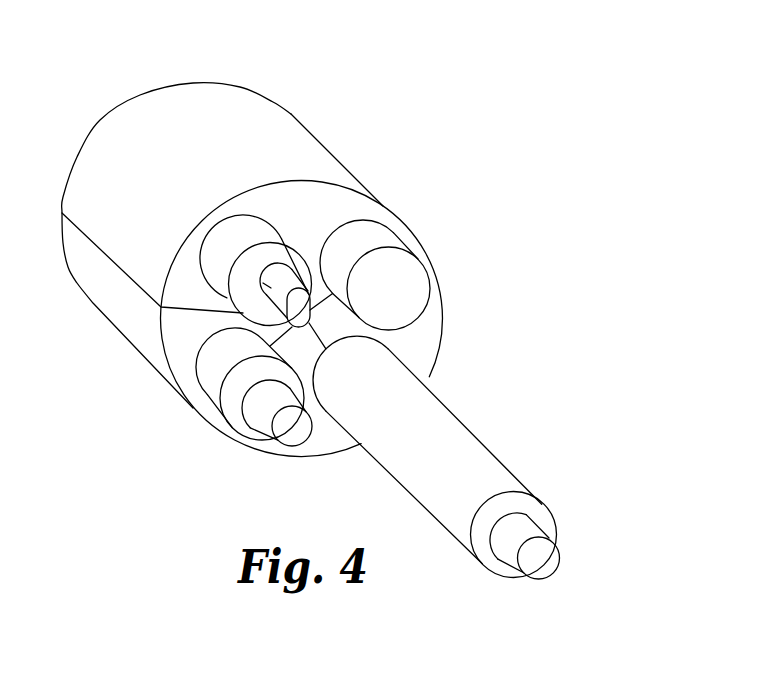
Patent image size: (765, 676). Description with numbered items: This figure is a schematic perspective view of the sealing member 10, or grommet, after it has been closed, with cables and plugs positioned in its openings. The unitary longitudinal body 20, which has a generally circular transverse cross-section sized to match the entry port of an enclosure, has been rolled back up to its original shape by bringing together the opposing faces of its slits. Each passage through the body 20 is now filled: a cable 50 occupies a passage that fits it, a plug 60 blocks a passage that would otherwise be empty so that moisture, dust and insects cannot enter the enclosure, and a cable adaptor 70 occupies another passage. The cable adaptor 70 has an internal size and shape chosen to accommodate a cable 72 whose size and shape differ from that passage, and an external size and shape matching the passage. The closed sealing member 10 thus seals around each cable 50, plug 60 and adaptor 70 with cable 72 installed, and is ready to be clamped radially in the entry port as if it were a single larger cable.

The sealing member 10 is at (384, 146).
The body 20 is at (291, 112).
The cable 50 is at (212, 390).
The plug 60 is at (417, 277).
The cable adaptor 70 is at (217, 250).
The cable 72 is at (267, 285).